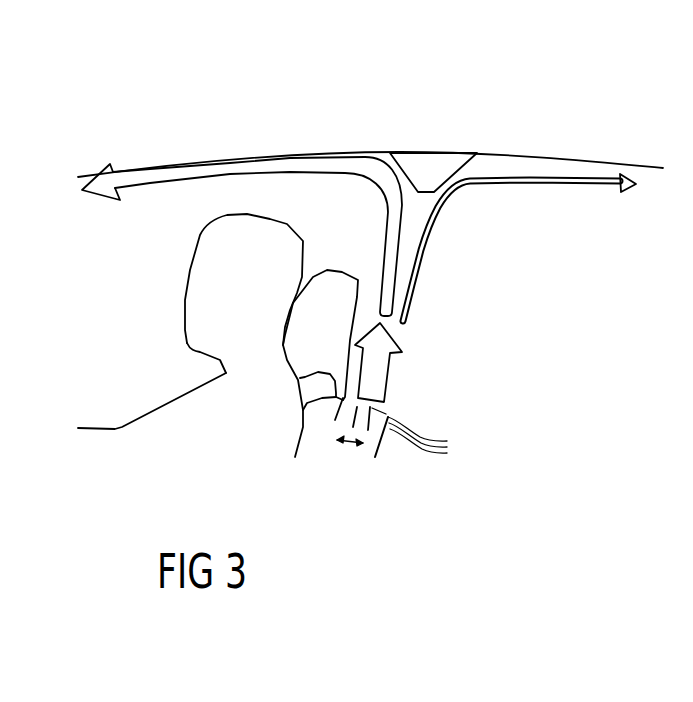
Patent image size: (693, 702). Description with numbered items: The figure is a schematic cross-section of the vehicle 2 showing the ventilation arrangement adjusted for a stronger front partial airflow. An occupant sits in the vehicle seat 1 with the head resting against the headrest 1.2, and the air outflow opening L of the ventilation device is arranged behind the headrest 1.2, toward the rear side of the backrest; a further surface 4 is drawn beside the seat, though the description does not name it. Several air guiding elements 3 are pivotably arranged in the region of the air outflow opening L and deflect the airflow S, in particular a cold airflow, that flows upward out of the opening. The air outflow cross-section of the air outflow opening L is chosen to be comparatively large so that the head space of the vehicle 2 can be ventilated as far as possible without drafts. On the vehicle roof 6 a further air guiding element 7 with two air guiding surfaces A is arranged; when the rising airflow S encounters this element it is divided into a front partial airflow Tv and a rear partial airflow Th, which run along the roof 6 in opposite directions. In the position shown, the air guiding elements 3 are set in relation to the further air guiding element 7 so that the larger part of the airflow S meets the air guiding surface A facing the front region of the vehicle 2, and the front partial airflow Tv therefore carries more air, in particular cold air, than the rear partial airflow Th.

The vehicle seat 1 is at (343, 473).
The headrest 1.2 is at (320, 310).
The vehicle 2 is at (355, 130).
The air guiding elements 3 is at (412, 436).
The seat backrest 4 is at (177, 418).
The vehicle roof 6 is at (525, 157).
The further air guiding element 7 is at (423, 162).
The air guiding surfaces A is at (397, 172).
The airflow S is at (400, 340).
The air outflow opening L is at (402, 395).
The front partial airflow Tv is at (147, 175).
The rear partial airflow Th is at (605, 177).